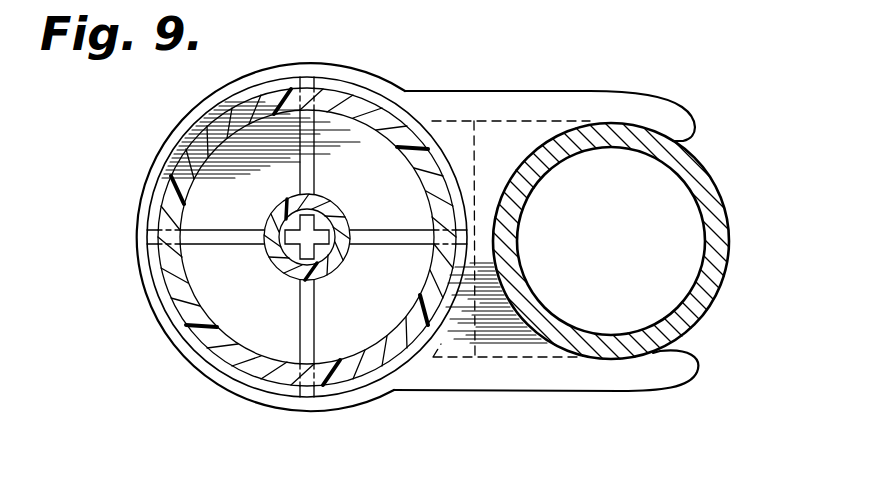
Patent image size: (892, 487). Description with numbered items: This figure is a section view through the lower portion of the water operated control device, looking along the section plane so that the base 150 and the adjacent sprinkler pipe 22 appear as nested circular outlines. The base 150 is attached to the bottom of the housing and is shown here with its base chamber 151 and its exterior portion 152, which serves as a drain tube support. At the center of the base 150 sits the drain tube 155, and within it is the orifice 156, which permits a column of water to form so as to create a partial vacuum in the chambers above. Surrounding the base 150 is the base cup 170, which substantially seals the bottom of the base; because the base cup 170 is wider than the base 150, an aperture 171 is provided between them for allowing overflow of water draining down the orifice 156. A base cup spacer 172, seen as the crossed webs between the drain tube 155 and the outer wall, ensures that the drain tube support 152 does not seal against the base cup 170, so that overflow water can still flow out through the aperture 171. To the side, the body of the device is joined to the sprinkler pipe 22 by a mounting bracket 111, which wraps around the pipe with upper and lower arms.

The sprinkler pipe 22 is at (703, 180).
The mounting brackets 111 is at (627, 379).
The base 150 is at (338, 212).
The base chamber 151 is at (230, 173).
The exterior portion (drain tube support) 152 is at (403, 340).
The drain tube 155 is at (292, 200).
The orifice 156 is at (332, 214).
The base cup 170 is at (200, 375).
The aperture 171 is at (163, 291).
The base cup spacer 172 is at (205, 228).